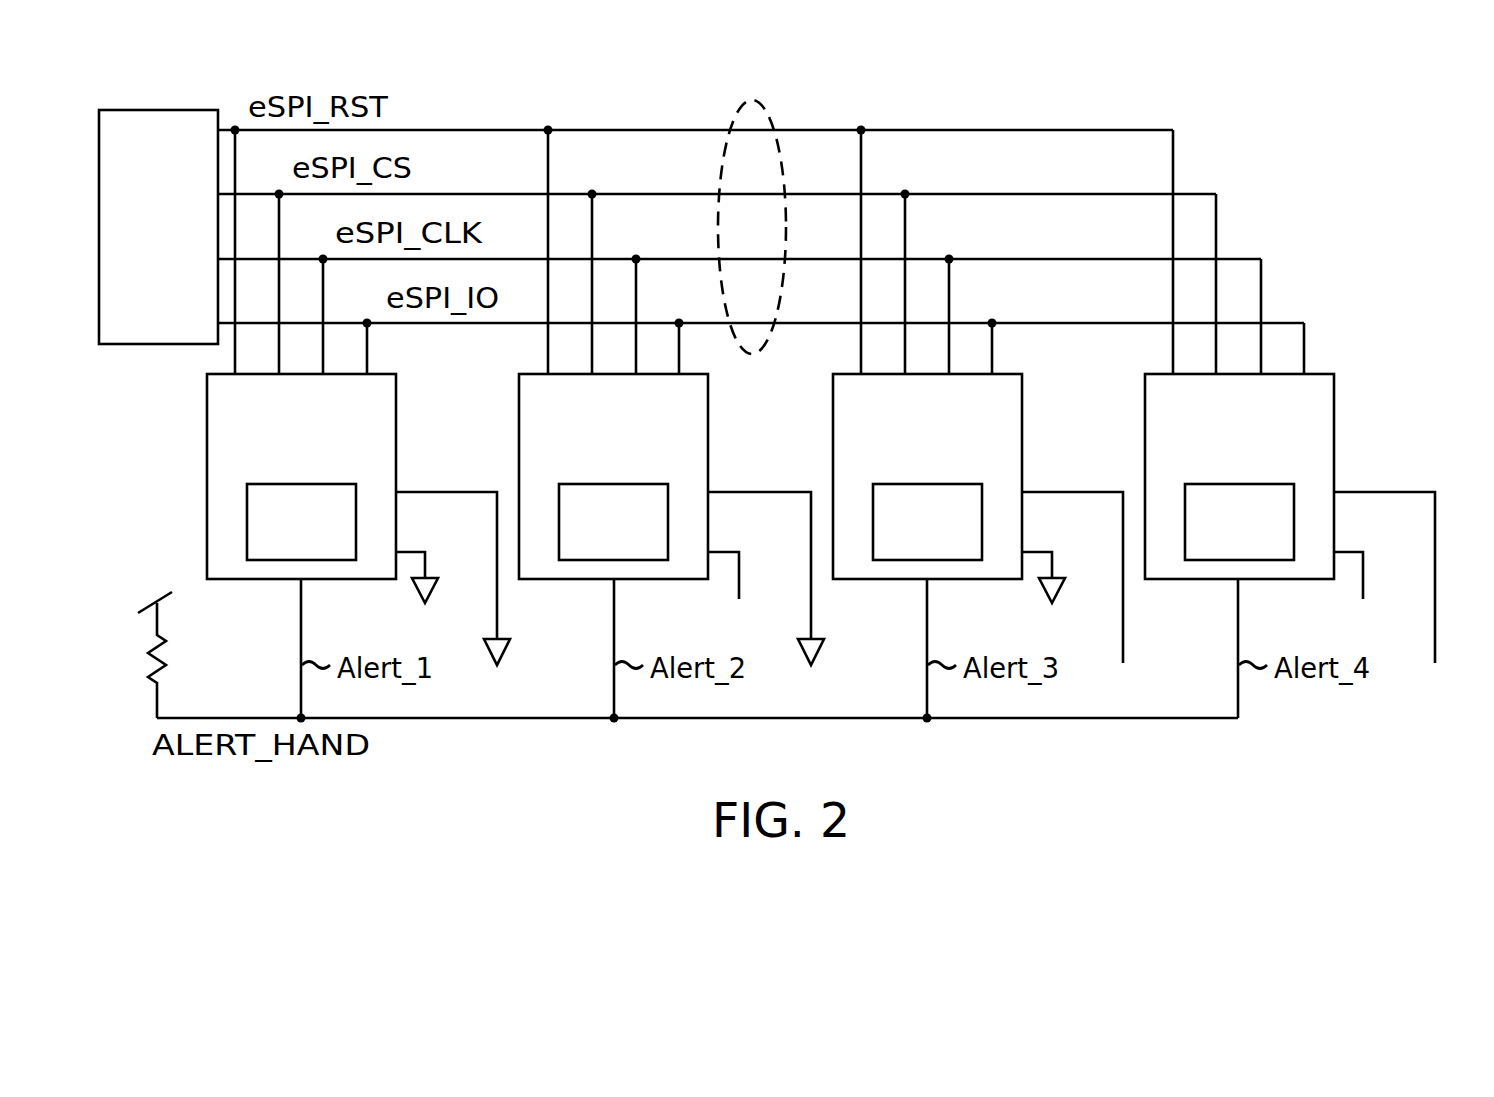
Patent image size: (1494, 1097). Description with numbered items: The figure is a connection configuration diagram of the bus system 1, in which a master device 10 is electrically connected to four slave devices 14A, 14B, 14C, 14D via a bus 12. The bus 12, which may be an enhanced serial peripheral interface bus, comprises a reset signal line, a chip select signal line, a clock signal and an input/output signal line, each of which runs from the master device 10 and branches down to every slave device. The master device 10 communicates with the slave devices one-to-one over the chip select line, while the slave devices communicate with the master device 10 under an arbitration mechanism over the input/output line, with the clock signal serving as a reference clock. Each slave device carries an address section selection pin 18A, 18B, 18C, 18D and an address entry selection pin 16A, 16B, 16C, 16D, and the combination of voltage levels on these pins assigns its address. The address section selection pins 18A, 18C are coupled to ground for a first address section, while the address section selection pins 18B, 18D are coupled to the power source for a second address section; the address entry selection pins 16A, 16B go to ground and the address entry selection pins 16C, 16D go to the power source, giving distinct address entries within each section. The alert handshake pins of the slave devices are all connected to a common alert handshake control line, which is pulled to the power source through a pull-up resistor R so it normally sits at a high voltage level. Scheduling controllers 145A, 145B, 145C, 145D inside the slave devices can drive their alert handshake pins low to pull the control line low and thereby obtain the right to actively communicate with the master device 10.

The bus system 1 is at (1363, 95).
The master device 10 is at (99, 112).
The bus 12 is at (750, 102).
The pull-up resistor R is at (165, 657).
The slave device 14A is at (397, 413).
The scheduling controller 145A is at (339, 539).
The address entry selection pin 16A is at (412, 490).
The address section selection pin 18A is at (412, 550).
The slave device 14B is at (709, 413).
The scheduling controller 145B is at (651, 539).
The address entry selection pin 16B is at (724, 490).
The address section selection pin 18B is at (724, 550).
The slave device 14C is at (1023, 413).
The scheduling controller 145C is at (965, 539).
The address entry selection pin 16C is at (1038, 490).
The address section selection pin 18C is at (1038, 550).
The slave device 14D is at (1335, 413).
The scheduling controller 145D is at (1277, 539).
The address entry selection pin 16D is at (1350, 490).
The address section selection pin 18D is at (1350, 550).